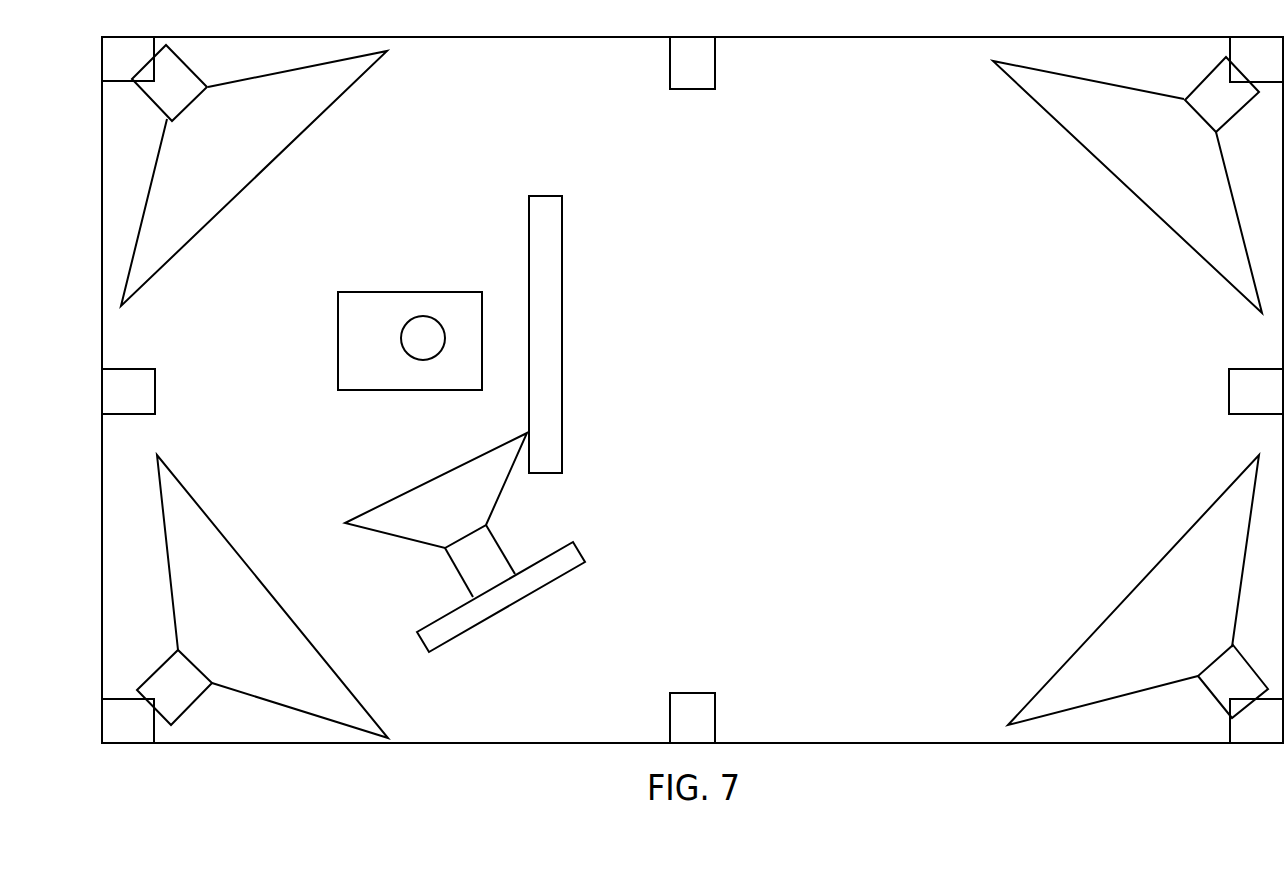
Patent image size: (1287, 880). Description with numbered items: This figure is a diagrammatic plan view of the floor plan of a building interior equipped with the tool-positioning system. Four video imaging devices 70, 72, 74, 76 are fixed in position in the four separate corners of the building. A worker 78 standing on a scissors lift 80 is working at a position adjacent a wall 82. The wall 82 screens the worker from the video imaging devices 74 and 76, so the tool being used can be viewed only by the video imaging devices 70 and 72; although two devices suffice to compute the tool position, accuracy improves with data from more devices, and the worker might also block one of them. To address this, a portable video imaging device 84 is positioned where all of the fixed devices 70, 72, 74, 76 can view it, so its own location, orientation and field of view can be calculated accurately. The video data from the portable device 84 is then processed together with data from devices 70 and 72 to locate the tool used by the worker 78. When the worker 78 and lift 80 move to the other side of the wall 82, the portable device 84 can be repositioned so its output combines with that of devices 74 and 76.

The video imaging device 70 is at (192, 80).
The video imaging device 72 is at (192, 692).
The video imaging device 74 is at (1207, 90).
The video imaging device 76 is at (1218, 685).
The worker 78 is at (423, 317).
The scissors lift 80 is at (379, 391).
The wall 82 is at (555, 238).
The portable video imaging device 84 is at (493, 553).